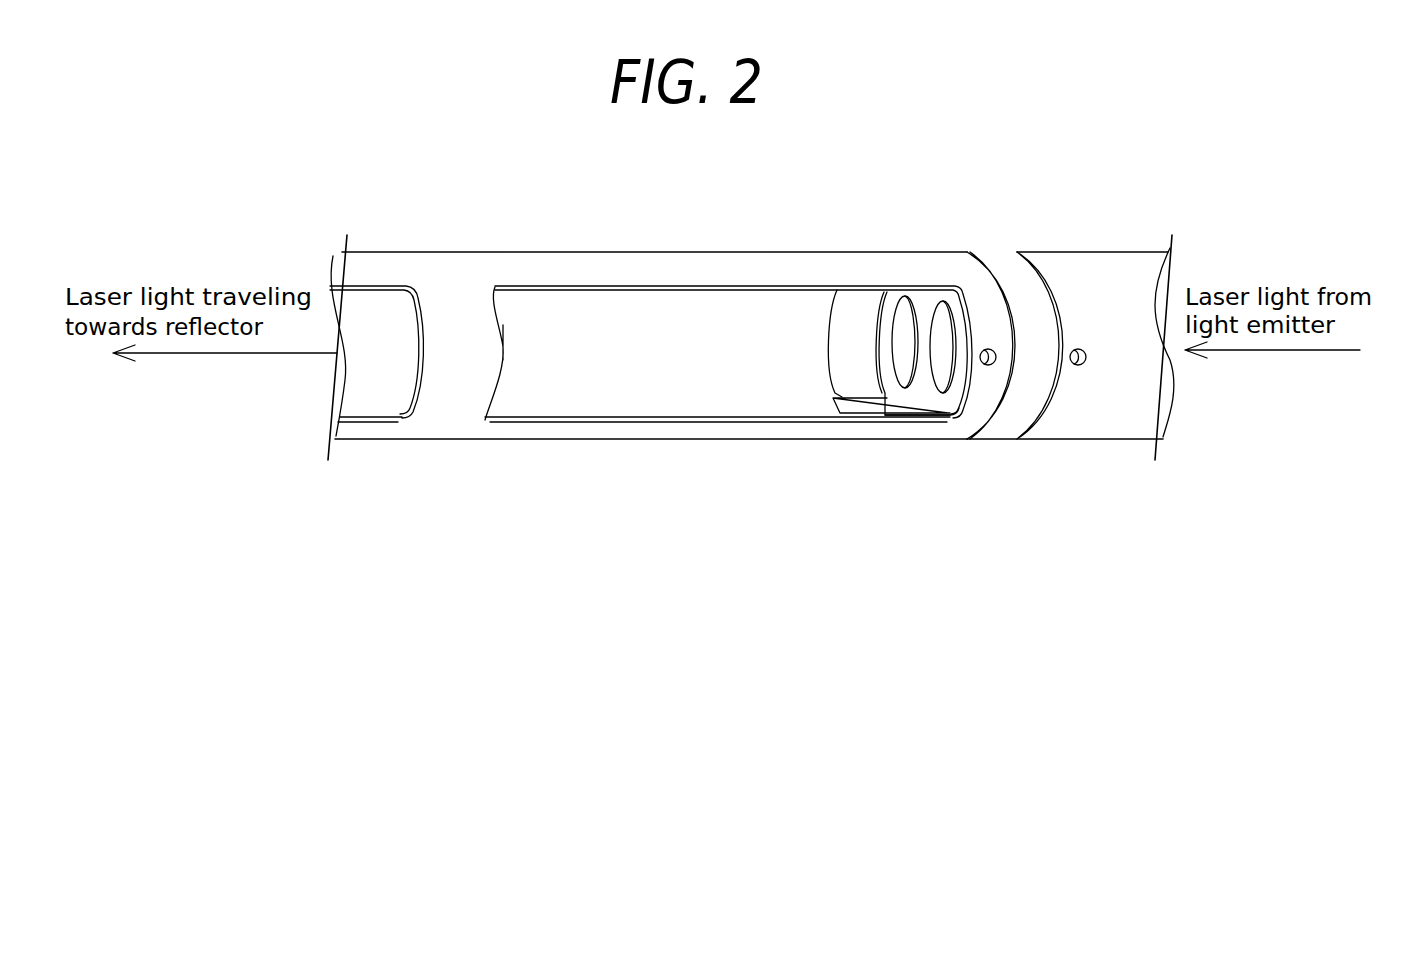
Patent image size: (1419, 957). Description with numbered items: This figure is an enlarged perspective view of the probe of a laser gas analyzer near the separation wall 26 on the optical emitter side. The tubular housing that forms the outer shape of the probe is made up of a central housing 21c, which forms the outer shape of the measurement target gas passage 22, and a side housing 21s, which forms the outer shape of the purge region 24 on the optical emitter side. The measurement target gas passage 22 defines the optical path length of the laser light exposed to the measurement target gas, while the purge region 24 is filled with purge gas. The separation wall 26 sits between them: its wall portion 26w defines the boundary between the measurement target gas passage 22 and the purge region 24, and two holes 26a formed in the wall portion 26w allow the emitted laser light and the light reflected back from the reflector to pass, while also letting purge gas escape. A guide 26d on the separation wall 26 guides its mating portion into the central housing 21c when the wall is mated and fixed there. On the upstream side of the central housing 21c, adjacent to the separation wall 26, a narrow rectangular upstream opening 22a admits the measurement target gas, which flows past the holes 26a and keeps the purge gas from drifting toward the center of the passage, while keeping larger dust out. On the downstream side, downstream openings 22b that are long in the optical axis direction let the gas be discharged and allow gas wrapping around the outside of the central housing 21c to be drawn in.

The central housing 21c is at (607, 252).
The side housing 21s is at (1095, 252).
The measurement target gas passage 22 is at (650, 383).
The upstream opening 22a is at (853, 313).
The downstream opening 22b is at (383, 403).
The purge region 24 is at (1100, 452).
The separation wall 26 is at (896, 359).
The hole 26a is at (898, 313).
The guide 26d is at (887, 403).
The wall portion 26w is at (937, 402).